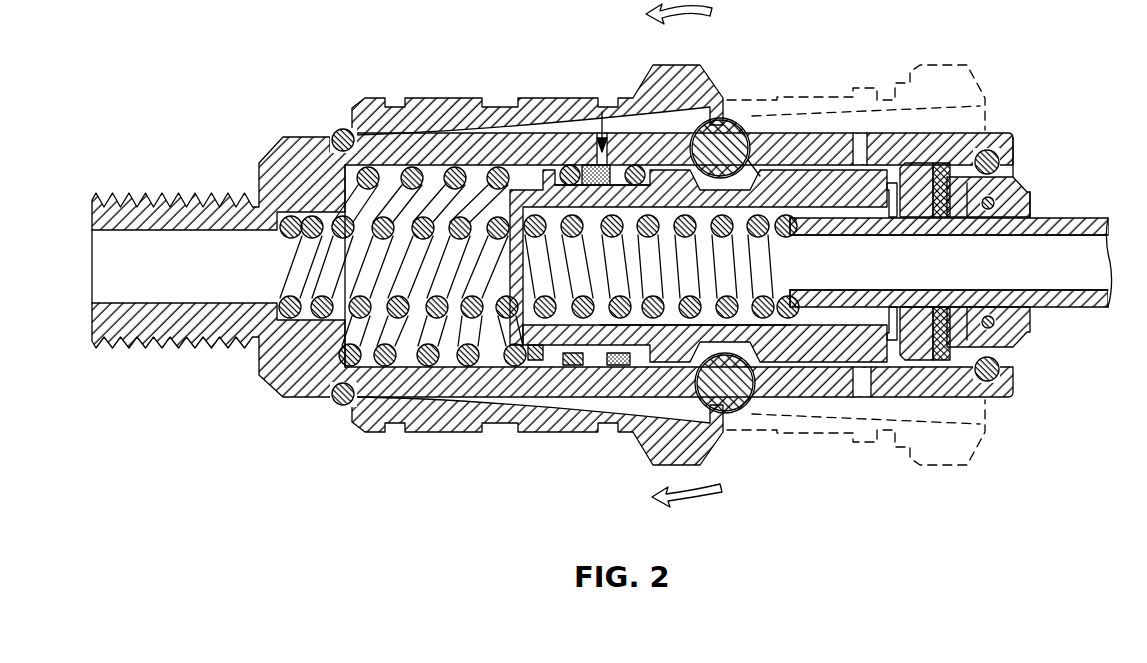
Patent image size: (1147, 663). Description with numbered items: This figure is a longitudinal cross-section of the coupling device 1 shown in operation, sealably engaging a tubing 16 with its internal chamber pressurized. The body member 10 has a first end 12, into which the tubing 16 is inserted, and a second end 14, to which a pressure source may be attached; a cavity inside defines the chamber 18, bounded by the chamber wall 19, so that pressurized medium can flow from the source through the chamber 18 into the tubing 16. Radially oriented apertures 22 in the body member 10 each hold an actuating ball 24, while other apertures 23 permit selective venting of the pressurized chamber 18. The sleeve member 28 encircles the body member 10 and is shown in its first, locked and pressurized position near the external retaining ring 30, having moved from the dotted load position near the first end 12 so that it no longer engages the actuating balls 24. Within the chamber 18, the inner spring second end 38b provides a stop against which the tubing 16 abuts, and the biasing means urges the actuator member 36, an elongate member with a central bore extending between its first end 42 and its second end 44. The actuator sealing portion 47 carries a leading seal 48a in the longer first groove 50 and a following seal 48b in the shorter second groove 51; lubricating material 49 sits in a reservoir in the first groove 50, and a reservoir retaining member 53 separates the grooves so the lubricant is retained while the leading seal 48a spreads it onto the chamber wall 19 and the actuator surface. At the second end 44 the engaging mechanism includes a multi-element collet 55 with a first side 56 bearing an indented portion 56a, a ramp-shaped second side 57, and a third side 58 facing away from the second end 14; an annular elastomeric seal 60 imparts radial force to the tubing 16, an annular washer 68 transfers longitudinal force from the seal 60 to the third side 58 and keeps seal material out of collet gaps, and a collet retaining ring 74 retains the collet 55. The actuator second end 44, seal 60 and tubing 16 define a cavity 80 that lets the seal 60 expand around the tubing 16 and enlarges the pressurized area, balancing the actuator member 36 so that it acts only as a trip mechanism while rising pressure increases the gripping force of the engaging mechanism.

The coupling device 1 is at (372, 68).
The body member 10 is at (262, 383).
The first end 12 is at (1032, 332).
The second end 14 is at (268, 160).
The tubing 16 is at (1100, 218).
The chamber 18 is at (748, 318).
The chamber wall 19 is at (432, 368).
The radially oriented apertures 22 is at (764, 178).
The apertures 23 is at (859, 136).
The actuating ball 24 is at (725, 135).
The sleeve member 28 is at (526, 100).
The external retaining ring 30 is at (334, 128).
The actuator member 36 is at (836, 185).
The inner spring second end 38b is at (795, 234).
The first end 42 is at (538, 332).
The second end 44 is at (949, 262).
The actuator sealing portion 47 is at (612, 167).
The leading seal 48a is at (620, 367).
The following seal 48b is at (537, 362).
The lubricating material 49 is at (578, 366).
The first groove 50 is at (627, 108).
The second groove 51 is at (573, 165).
The reservoir retaining member 53 is at (592, 172).
The multi-element collet 55 is at (1035, 196).
The first side 56 is at (968, 200).
The indented portion 56a is at (993, 208).
The second side 57 is at (1020, 185).
The third side 58 is at (984, 150).
The annular elastomeric seal 60 is at (922, 356).
The annular washer 68 is at (945, 363).
The collet retaining ring 74 is at (1015, 140).
The cavity 80 is at (893, 208).